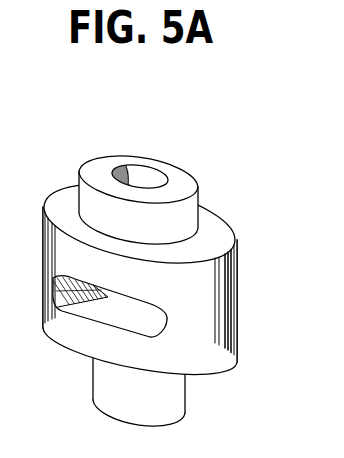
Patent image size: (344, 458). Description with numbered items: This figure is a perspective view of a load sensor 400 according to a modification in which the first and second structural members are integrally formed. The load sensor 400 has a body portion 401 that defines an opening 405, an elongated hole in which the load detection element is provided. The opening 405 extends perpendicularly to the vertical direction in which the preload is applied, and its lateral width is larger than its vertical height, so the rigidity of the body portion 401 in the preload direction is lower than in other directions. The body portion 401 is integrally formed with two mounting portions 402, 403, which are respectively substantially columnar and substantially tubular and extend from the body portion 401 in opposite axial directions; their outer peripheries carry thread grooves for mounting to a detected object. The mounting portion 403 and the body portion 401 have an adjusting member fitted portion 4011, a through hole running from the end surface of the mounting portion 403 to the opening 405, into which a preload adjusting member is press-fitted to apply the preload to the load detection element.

The load sensor 400 is at (251, 354).
The body portion 401 is at (164, 272).
The mounting portion 402 is at (167, 403).
The mounting portion 403 is at (171, 181).
The adjusting member fitted portion 4011 is at (140, 176).
The opening 405 is at (138, 323).